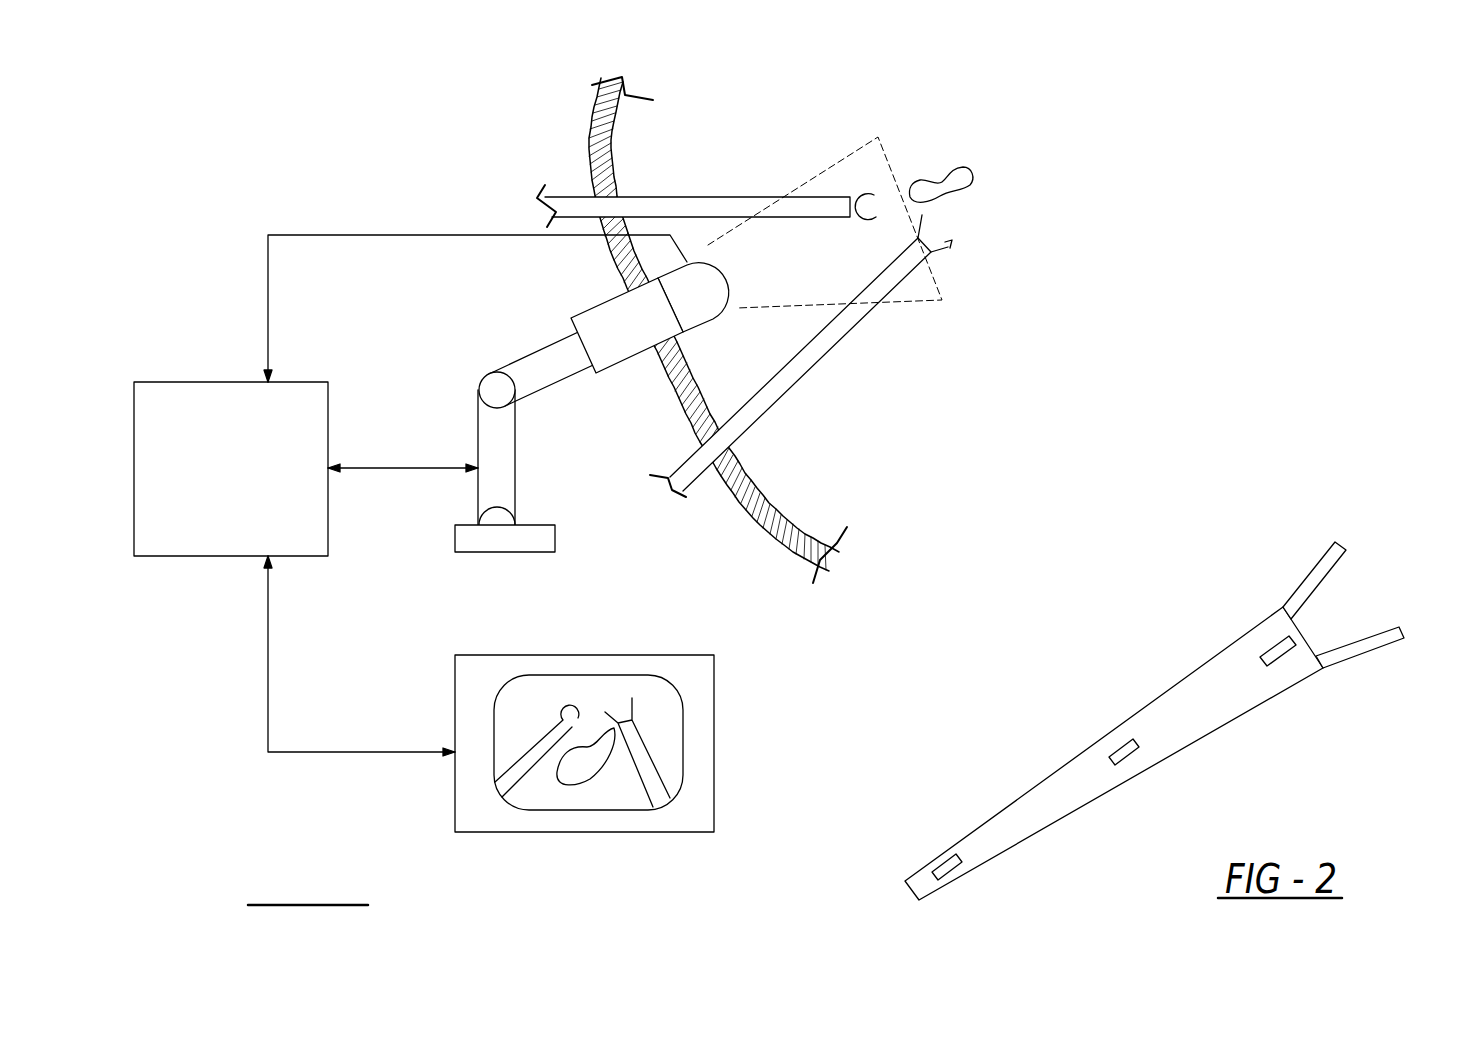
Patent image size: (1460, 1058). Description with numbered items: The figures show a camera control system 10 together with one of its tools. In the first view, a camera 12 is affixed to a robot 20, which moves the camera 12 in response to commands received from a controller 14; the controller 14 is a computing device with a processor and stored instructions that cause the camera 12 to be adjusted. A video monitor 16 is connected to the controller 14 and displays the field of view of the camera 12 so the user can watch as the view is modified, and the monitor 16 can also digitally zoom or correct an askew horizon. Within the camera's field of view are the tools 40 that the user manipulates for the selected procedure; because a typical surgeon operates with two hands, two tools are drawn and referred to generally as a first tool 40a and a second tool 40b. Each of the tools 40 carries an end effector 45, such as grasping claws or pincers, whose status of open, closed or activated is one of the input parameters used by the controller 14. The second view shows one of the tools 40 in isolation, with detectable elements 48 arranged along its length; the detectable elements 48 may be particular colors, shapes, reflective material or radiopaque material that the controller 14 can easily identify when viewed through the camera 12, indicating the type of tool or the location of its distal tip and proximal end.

In FIG. 1, the system 10 is at (222, 187).
In FIG. 1, the camera 12 is at (707, 282).
In FIG. 1, the controller 14 is at (198, 556).
In FIG. 1, the video monitor 16 is at (715, 738).
In FIG. 1, the robot 20 is at (517, 462).
In FIG. 1, the tools 40 is at (808, 405).
In FIG. 2, the tools 40 is at (1169, 757).
In FIG. 1, the tool 40a is at (840, 340).
In FIG. 1, the tool 40b is at (673, 197).
In FIG. 1, the end effector 45 is at (945, 247).
In FIG. 2, the end effector 45 is at (1321, 557).
In FIG. 2, the detectable elements 48 is at (1120, 748).